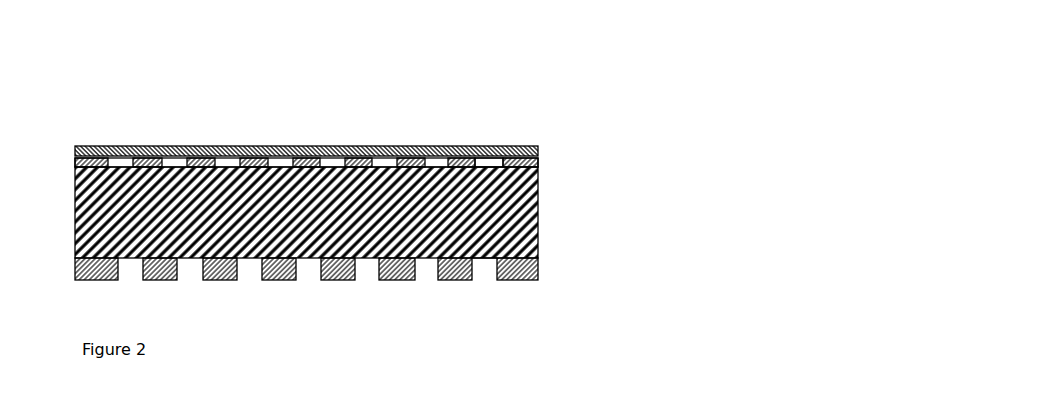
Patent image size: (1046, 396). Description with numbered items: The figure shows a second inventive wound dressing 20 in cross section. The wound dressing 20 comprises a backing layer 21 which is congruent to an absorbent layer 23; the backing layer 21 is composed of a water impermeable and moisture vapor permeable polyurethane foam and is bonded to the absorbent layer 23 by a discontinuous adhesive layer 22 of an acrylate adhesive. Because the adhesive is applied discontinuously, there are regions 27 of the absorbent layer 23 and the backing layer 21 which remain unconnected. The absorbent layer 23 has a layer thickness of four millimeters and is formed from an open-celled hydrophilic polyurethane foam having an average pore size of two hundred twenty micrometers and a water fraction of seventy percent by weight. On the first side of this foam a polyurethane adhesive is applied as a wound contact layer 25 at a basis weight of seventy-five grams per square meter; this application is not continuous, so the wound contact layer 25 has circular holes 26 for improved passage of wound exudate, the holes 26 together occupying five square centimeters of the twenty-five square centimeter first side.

The wound dressing 20 is at (116, 136).
The backing layer 21 is at (544, 150).
The discontinuous adhesive layer 22 is at (544, 162).
The absorbent layer 23 is at (542, 213).
The wound contact layer 25 is at (544, 268).
The circular holes 26 is at (485, 274).
The regions 27 is at (492, 156).